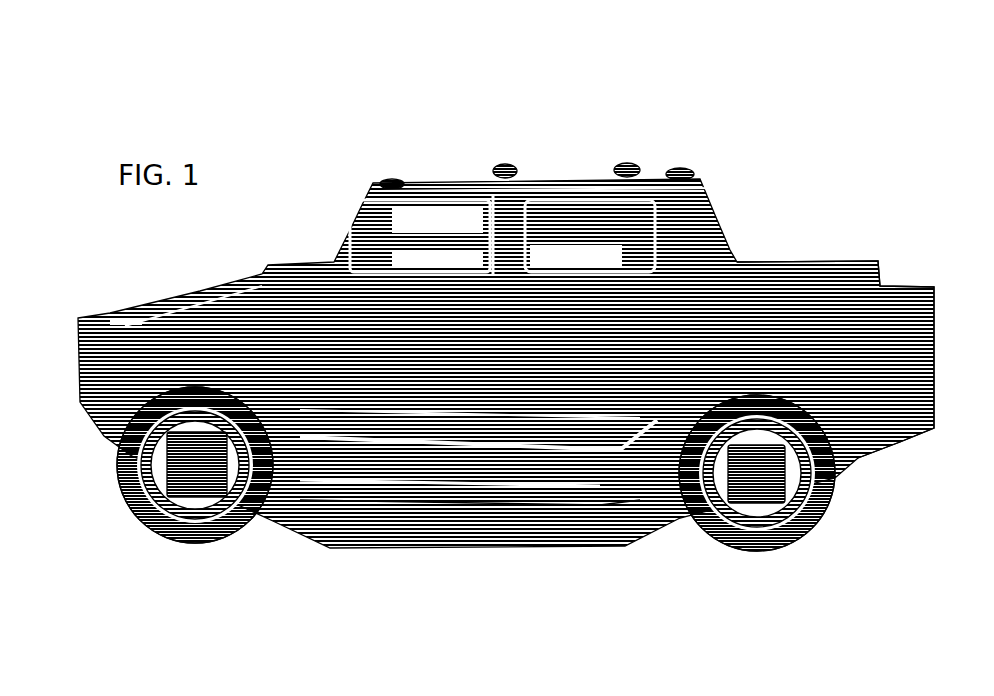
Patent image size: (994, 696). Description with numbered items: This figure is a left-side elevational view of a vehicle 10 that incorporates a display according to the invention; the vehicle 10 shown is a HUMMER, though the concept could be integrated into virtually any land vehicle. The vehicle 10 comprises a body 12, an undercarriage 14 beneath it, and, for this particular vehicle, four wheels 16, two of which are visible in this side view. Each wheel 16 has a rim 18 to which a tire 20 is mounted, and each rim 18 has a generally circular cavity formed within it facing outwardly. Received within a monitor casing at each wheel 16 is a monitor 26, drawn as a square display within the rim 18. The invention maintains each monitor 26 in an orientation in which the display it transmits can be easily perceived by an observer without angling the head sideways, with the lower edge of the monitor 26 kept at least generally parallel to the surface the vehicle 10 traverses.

The vehicle 10 is at (612, 100).
The body 12 is at (803, 262).
The undercarriage 14 is at (530, 512).
The wheels 16 is at (153, 540).
The rim 18 is at (203, 523).
The tire 20 is at (117, 497).
The monitor 26 is at (167, 460).